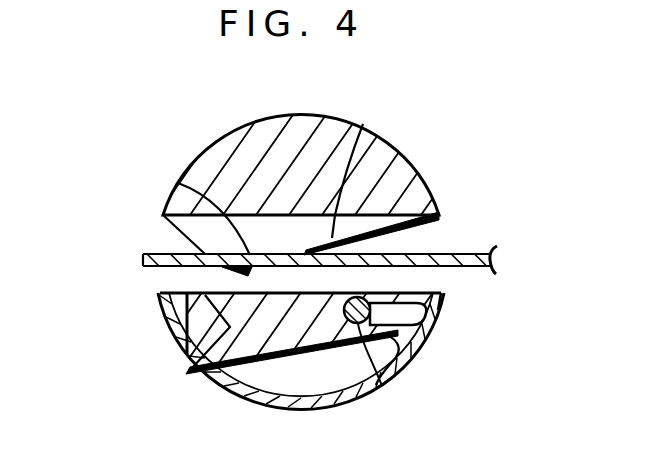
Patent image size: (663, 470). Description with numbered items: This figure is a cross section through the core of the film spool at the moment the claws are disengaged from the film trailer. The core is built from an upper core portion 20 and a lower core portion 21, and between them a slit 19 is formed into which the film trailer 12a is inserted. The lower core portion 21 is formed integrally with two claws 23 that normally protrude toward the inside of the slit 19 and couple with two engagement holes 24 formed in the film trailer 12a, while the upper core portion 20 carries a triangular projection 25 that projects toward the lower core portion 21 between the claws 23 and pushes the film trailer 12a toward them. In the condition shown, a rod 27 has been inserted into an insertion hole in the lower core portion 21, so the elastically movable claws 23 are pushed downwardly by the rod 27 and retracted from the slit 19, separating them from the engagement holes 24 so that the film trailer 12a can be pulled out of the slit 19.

The film trailer 12a is at (428, 255).
The slit 19 is at (190, 277).
The upper core portion 20 is at (398, 172).
The lower core portion 21 is at (418, 346).
The claws 23 is at (243, 385).
The engagement holes 24 is at (180, 184).
The triangular projection 25 is at (363, 125).
The rod 27 is at (382, 387).